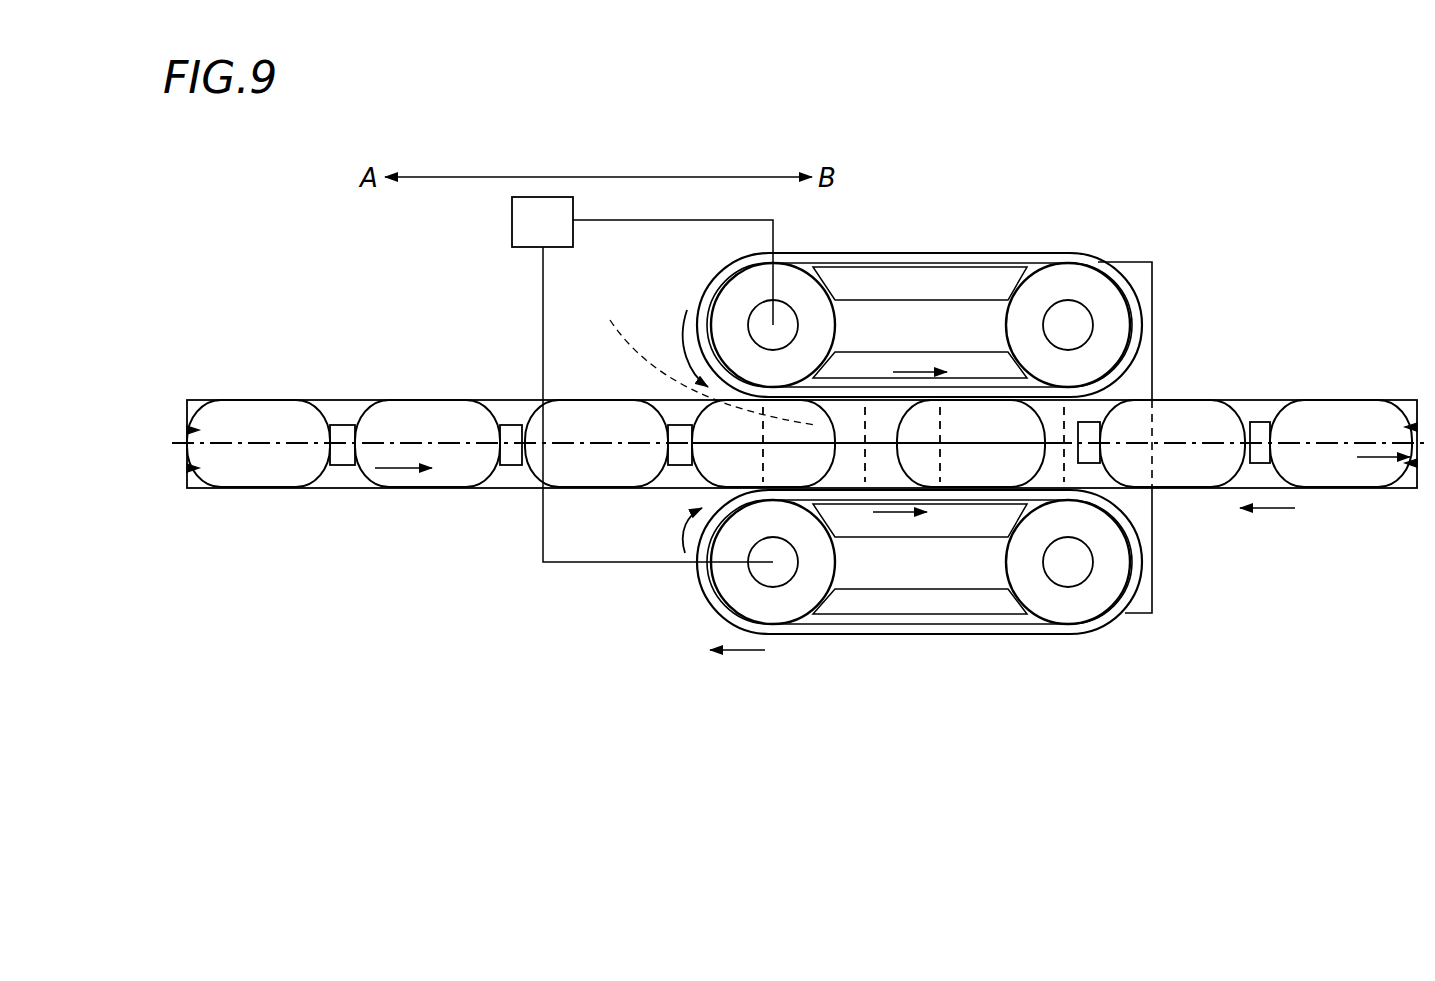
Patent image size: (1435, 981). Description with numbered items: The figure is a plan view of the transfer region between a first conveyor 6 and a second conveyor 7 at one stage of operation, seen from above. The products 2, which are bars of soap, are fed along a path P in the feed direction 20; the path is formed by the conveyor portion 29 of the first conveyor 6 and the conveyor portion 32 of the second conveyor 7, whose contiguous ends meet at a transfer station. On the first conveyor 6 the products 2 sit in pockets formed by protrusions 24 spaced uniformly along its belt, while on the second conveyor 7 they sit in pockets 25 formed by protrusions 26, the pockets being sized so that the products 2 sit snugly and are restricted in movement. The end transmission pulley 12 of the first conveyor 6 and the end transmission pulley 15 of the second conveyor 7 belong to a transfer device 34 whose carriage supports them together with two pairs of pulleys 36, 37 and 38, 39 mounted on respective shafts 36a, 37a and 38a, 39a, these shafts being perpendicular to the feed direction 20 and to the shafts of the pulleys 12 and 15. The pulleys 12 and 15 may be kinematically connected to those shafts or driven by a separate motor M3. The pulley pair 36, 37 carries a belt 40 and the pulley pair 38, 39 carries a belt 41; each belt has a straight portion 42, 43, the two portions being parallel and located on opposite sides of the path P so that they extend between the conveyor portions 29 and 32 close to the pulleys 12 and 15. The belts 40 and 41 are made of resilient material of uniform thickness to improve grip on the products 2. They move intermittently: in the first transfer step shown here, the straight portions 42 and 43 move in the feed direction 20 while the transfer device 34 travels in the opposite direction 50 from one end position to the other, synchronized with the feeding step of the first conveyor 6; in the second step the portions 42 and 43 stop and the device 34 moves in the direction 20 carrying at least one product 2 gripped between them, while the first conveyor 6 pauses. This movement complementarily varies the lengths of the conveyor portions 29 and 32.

The products 2 is at (357, 420).
The first conveyor 6 is at (462, 385).
The second conveyor 7 is at (1380, 373).
The path P is at (242, 442).
The pulley 12 is at (709, 357).
The pulley 15 is at (1100, 510).
The feed direction 20 is at (402, 472).
The protrusions 24 is at (337, 457).
The protrusions 26 is at (1257, 428).
The conveyor portion 29 is at (402, 393).
The conveyor portion 32 is at (1290, 380).
The transfer device 34 is at (923, 240).
The pulley 36 is at (752, 290).
The shaft 36a is at (768, 327).
The pulley 37 is at (1060, 280).
The shaft 37a is at (1072, 315).
The pulley 38 is at (742, 583).
The shaft 38a is at (765, 567).
The pulley 39 is at (1053, 590).
The shaft 39a is at (1067, 565).
The belt 40 is at (853, 248).
The belt 41 is at (917, 634).
The straight portion 42 is at (875, 393).
The straight portion 43 is at (845, 490).
The pockets 25 is at (1013, 502).
The opposite direction 50 is at (742, 652).
The motor M3 is at (642, 379).